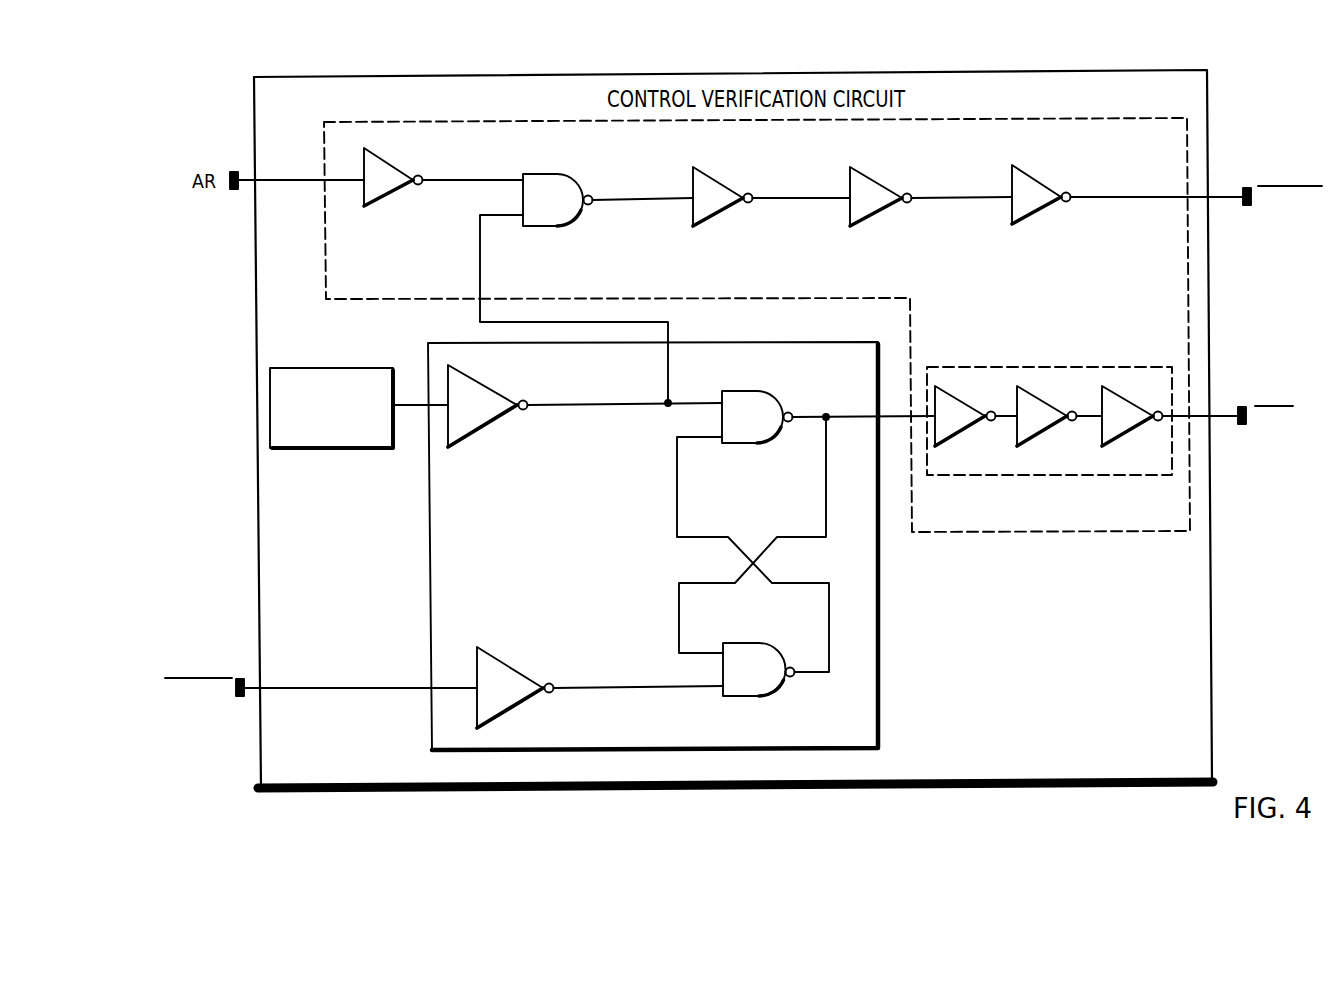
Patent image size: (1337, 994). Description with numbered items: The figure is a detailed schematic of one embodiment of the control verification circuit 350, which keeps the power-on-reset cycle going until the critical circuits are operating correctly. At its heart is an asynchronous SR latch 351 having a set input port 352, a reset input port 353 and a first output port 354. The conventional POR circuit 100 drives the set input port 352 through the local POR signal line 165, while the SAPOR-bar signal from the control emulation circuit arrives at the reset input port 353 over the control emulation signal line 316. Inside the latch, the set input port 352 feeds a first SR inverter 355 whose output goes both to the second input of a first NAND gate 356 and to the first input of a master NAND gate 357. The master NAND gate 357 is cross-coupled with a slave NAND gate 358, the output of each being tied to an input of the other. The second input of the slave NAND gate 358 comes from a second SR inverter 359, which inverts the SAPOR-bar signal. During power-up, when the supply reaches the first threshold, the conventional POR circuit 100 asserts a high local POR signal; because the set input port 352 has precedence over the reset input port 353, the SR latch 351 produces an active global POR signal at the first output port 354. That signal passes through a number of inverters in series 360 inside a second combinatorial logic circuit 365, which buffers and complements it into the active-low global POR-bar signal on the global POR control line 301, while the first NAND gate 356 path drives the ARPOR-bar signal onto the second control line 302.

The conventional POR circuit 100 is at (348, 441).
The local POR signal line 165 is at (405, 400).
The global POR control line 301 is at (1228, 417).
The second control line 302 is at (1230, 197).
The control emulation signal line 316 is at (253, 685).
The control verification circuit 350 is at (1162, 757).
The SR latch 351 is at (846, 736).
The set input port 352 is at (423, 407).
The reset input port 353 is at (392, 690).
The first output port 354 is at (888, 413).
The first SR inverter 355 is at (493, 416).
The first NAND gate 356 is at (570, 211).
The master NAND gate 357 is at (768, 427).
The slave NAND gate 358 is at (770, 679).
The second SR inverter 359 is at (520, 697).
The inverters in series 360 is at (1160, 471).
The second combinatorial logic circuit 365 is at (1180, 526).